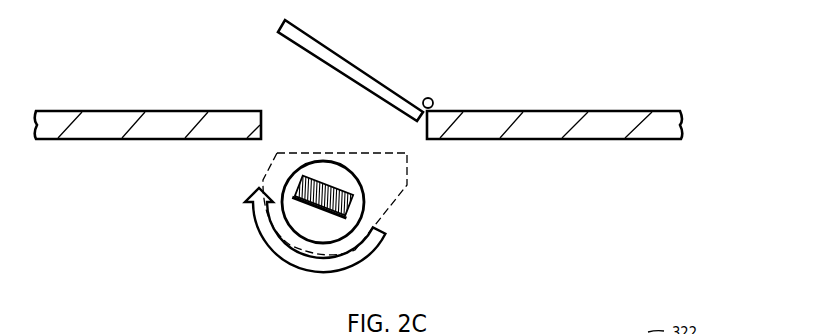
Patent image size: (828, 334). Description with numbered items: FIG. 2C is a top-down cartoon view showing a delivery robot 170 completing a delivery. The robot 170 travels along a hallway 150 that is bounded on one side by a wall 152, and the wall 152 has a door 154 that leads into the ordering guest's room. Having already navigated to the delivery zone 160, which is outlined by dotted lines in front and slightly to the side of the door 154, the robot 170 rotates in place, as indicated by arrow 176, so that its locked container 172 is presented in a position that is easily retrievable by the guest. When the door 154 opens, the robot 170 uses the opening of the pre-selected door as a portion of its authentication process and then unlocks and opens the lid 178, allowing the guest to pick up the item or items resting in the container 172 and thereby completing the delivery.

The hallway 150 is at (397, 106).
The wall 152 is at (157, 140).
The door 154 is at (348, 64).
The delivery zone 160 is at (266, 179).
The robot 170 is at (362, 176).
The container 172 is at (333, 193).
The arrow 176 is at (293, 258).
The lid 178 is at (330, 226).